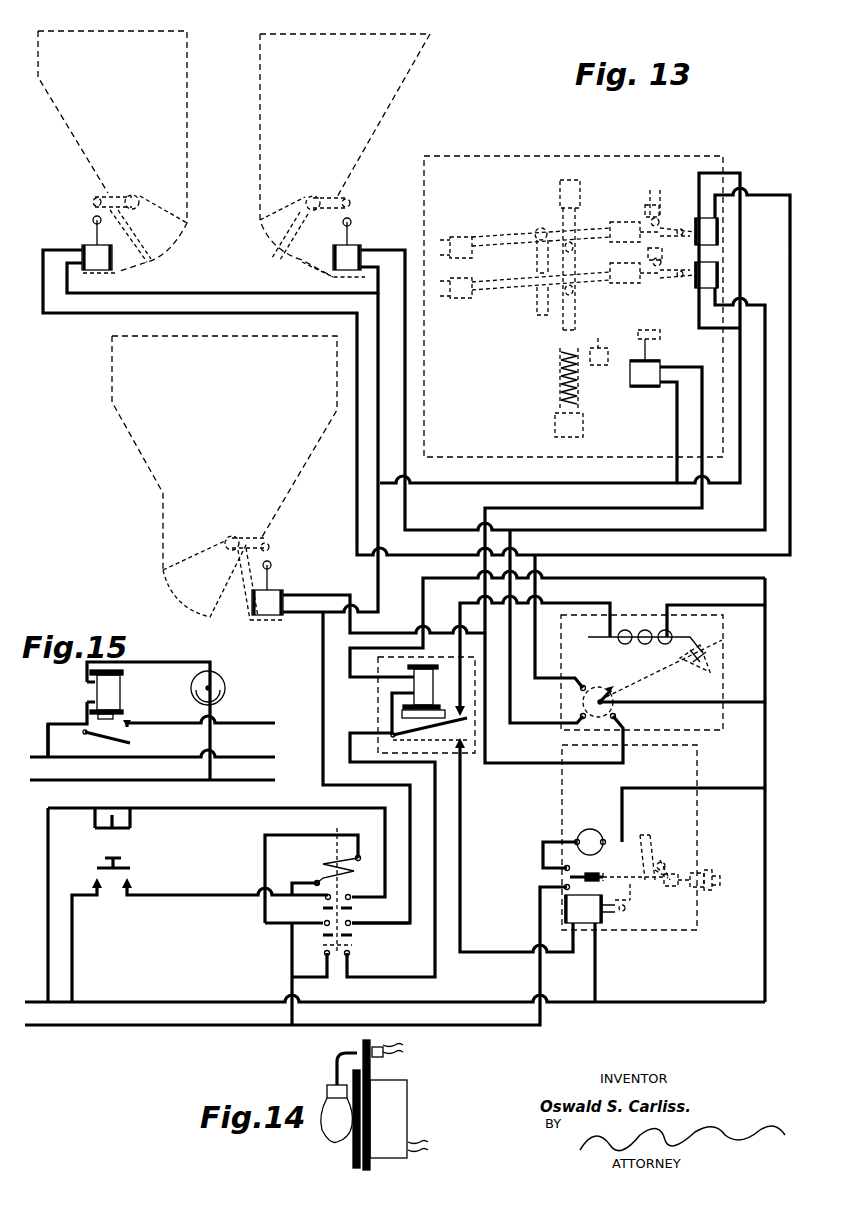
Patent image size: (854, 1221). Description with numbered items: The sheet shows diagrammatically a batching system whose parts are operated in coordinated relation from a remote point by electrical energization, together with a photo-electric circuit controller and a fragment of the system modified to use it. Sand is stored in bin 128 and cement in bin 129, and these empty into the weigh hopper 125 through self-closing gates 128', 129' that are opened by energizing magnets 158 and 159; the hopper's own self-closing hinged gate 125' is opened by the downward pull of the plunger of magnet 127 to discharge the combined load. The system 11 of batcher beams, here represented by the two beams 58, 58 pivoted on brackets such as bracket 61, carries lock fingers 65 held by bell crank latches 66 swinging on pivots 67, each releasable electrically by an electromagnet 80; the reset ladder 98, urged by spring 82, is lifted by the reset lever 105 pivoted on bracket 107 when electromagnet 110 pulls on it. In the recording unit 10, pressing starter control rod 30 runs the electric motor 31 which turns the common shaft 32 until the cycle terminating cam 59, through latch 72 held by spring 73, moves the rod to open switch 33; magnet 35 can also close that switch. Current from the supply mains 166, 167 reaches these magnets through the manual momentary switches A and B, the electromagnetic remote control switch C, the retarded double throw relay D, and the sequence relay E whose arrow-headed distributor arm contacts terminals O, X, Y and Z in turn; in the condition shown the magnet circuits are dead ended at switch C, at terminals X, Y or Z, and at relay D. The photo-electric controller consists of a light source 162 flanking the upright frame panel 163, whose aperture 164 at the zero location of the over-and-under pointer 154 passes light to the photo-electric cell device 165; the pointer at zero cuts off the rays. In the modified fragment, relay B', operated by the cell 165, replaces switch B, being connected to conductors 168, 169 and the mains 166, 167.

In FIG. 13, the control unit 10 is at (559, 826).
In FIG. 13, the system of batcher beams 11 is at (548, 152).
In FIG. 13, the starter control rod 30 is at (685, 890).
In FIG. 13, the electric motor 31 is at (590, 842).
In FIG. 13, the common shaft 32 is at (644, 835).
In FIG. 13, the switch 33 is at (585, 876).
In FIG. 13, the magnet 35 is at (590, 904).
In FIG. 13, the graduations 58 is at (492, 240).
In FIG. 13, the cycle terminating cam 59 is at (659, 861).
In FIG. 13, the bracket 61 is at (533, 250).
In FIG. 13, the lock finger 65 is at (645, 212).
In FIG. 13, the latch 66 is at (665, 222).
In FIG. 13, the pivot 67 is at (655, 190).
In FIG. 13, the latch 72 is at (668, 874).
In FIG. 13, the spring 73 is at (628, 905).
In FIG. 13, the electromagnet 80 is at (707, 253).
In FIG. 13, the spring 82 is at (560, 388).
In FIG. 13, the reset ladder 98 is at (578, 302).
In FIG. 13, the reset lever 105 is at (646, 330).
In FIG. 13, the bracket 107 is at (598, 366).
In FIG. 13, the electromagnet 110 is at (647, 373).
In FIG. 13, the weigh hopper 125 is at (224, 453).
In FIG. 13, the self-closing hinged gate 125' is at (200, 578).
In FIG. 13, the magnet 127 is at (270, 588).
In FIG. 13, the bin 128 is at (112, 151).
In FIG. 13, the self-closing gate 128' is at (148, 234).
In FIG. 13, the bin 129 is at (345, 155).
In FIG. 13, the self-closing gate 129' is at (310, 236).
In FIG. 14, the over-and-under indicating pointer 154 is at (353, 1152).
In FIG. 13, the magnet 158 is at (99, 243).
In FIG. 13, the magnet 159 is at (350, 244).
In FIG. 14, the source of light 162 is at (326, 1135).
In FIG. 14, the upright frame panel 163 is at (372, 1074).
In FIG. 14, the aperture 164 is at (388, 1072).
In FIG. 15, the photo-electric cell device 165 is at (226, 688).
In FIG. 14, the photo-electric cell device 165 is at (407, 1116).
In FIG. 13, the current supply main 166 is at (130, 1005).
In FIG. 15, the current supply main 166 is at (254, 760).
In FIG. 13, the current supply main 167 is at (128, 1030).
In FIG. 15, the current supply main 167 is at (256, 782).
In FIG. 13, the conductor 168 is at (233, 816).
In FIG. 15, the conductor 168 is at (236, 725).
In FIG. 13, the conductor 169 is at (47, 852).
In FIG. 15, the conductor 169 is at (60, 723).
In FIG. 13, the momentary contact switch A is at (130, 866).
In FIG. 13, the momentary contact switch B is at (123, 822).
In FIG. 15, the relay B' is at (115, 702).
In FIG. 13, the electromagnetic remote control switch C is at (356, 938).
In FIG. 13, the retarded double throw relay D is at (374, 712).
In FIG. 13, the sequence relay E is at (722, 720).
In FIG. 13, the circuit terminal O is at (607, 696).
In FIG. 13, the circuit terminal X is at (582, 676).
In FIG. 13, the circuit terminal Y is at (574, 715).
In FIG. 13, the circuit terminal Z is at (624, 717).